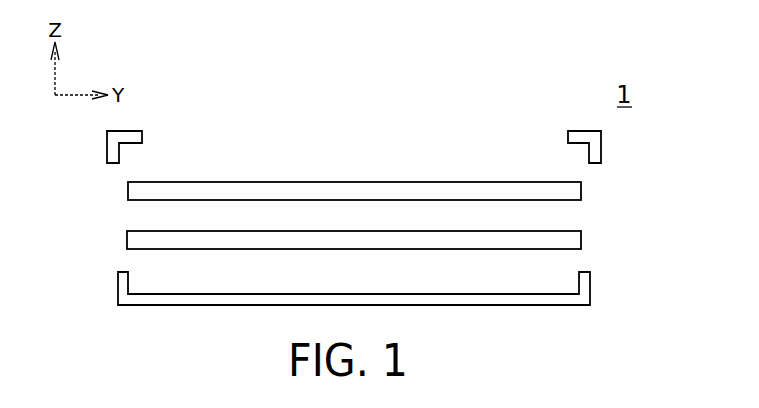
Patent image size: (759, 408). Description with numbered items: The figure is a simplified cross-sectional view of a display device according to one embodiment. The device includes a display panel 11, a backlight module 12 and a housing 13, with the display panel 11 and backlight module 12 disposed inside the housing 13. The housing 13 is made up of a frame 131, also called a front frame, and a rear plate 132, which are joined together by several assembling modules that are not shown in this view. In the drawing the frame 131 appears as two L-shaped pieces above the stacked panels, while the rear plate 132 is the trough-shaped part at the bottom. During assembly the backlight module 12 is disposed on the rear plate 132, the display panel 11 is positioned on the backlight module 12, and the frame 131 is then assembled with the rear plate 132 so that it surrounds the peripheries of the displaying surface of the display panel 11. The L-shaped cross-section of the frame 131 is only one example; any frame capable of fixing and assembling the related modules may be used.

The display panel 11 is at (135, 191).
The backlight module 12 is at (134, 241).
The housing 13 is at (665, 170).
The frame 131 is at (590, 150).
The rear plate 132 is at (588, 285).